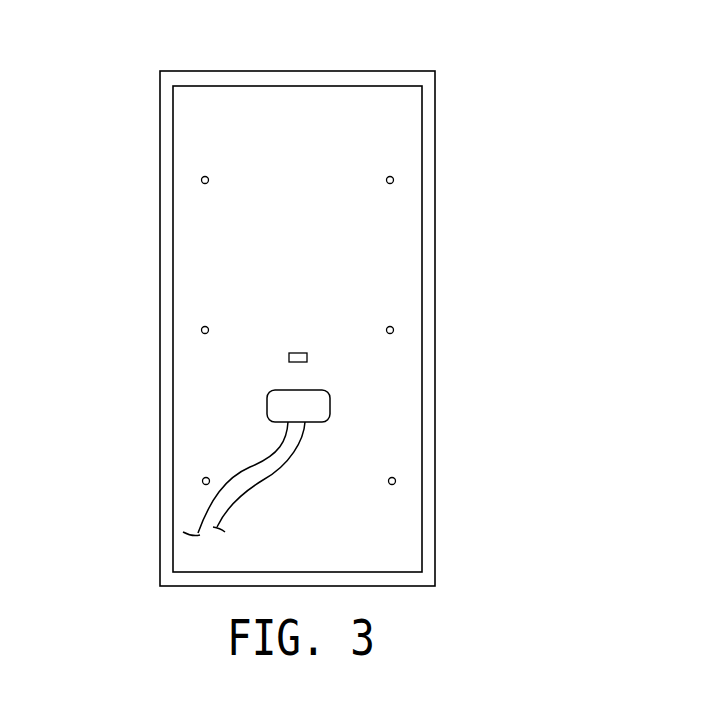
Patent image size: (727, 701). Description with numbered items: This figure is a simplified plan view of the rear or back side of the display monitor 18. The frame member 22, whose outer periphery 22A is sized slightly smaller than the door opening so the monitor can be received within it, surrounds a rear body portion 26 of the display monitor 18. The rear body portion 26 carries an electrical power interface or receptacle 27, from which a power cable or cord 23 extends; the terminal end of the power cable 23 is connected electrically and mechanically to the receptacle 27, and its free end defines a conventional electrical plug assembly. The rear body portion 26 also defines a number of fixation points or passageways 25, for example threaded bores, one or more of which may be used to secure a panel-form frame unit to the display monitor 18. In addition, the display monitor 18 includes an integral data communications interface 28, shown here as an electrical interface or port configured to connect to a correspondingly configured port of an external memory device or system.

The display monitor 18 is at (518, 86).
The frame member 22 is at (152, 112).
The outer periphery 22A is at (218, 70).
The rear body portion 26 is at (313, 86).
The fixation passageways 25 is at (208, 175).
The data communications interface 28 is at (307, 358).
The electrical power receptacle 27 is at (330, 402).
The power cable 23 is at (238, 495).